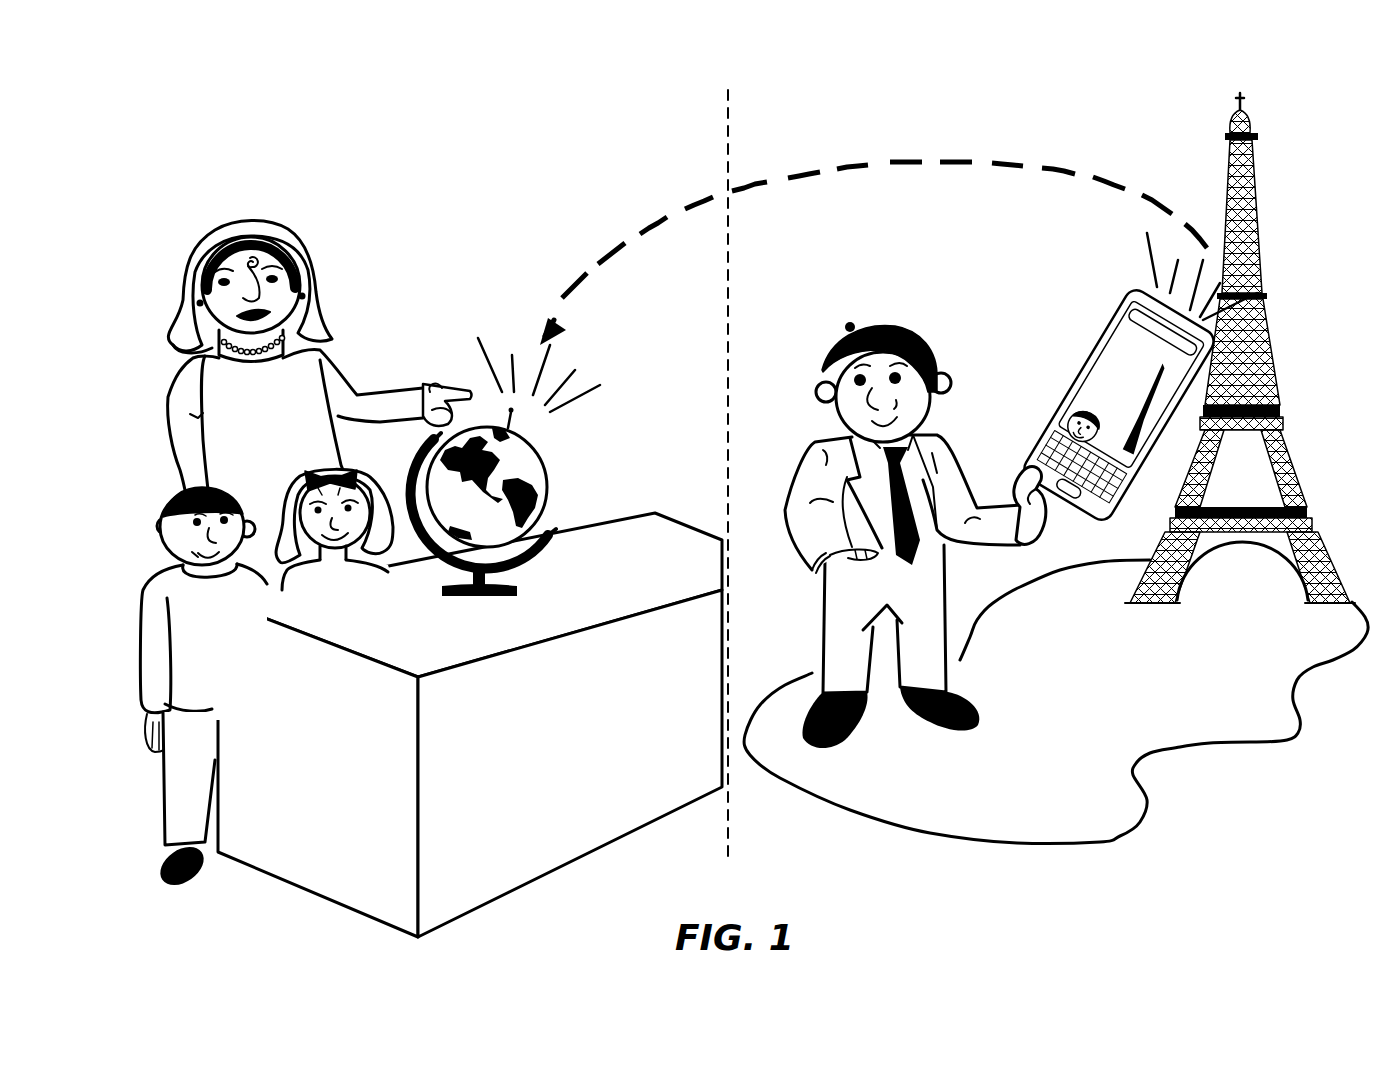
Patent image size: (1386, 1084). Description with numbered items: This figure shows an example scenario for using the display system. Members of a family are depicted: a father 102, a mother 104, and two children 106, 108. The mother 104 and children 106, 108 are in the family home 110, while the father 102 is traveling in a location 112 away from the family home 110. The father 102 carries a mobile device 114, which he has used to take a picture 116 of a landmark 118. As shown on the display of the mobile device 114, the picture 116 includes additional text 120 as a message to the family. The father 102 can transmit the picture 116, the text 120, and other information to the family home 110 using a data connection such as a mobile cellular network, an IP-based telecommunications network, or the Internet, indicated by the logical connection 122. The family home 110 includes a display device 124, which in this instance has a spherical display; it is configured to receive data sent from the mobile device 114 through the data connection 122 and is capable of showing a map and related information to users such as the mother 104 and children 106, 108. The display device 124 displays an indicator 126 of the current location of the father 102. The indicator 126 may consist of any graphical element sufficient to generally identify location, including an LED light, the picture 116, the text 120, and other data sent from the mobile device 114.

The father 102 is at (844, 346).
The mother 104 is at (203, 243).
The child 106 is at (348, 471).
The child 108 is at (177, 503).
The family home 110 is at (410, 230).
The location 112 is at (1070, 150).
The mobile device 114 is at (1115, 378).
The picture 116 is at (1082, 426).
The landmark 118 is at (1258, 185).
The text 120 is at (1119, 380).
The logical connection 122 is at (857, 164).
The display device 124 is at (548, 487).
The indicator 126 is at (512, 424).